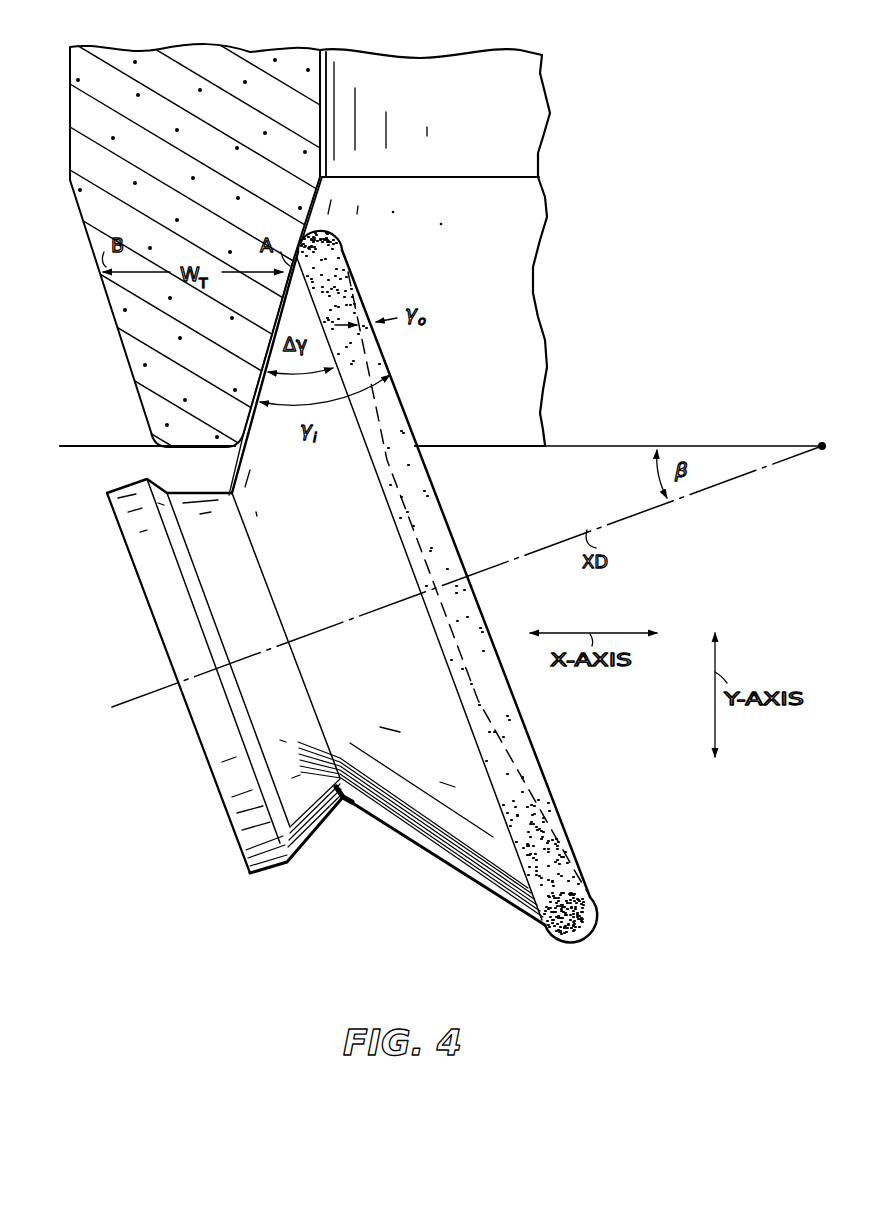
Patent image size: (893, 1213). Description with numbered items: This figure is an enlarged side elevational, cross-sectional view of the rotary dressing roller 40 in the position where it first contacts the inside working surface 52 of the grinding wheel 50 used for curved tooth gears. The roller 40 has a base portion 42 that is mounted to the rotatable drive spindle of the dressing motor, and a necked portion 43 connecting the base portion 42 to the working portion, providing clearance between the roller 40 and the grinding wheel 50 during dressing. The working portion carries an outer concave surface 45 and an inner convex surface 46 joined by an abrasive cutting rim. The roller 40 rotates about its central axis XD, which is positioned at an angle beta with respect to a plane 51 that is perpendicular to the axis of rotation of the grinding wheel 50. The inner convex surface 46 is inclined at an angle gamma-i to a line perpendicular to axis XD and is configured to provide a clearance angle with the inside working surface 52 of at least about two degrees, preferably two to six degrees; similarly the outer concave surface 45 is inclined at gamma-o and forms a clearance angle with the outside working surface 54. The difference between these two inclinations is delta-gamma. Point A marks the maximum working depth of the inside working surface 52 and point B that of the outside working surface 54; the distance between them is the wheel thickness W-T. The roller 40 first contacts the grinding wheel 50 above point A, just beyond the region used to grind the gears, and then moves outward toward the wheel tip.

The rotary dressing roller 40 is at (425, 872).
The base portion 42 is at (222, 808).
The necked portion 43 is at (196, 490).
The outer concave surface 45 is at (425, 437).
The inner convex surface 46 is at (251, 418).
The grinding wheel 50 is at (449, 68).
The plane 51 is at (585, 446).
The inside working surface 52 is at (258, 382).
The outside working surface 54 is at (138, 385).